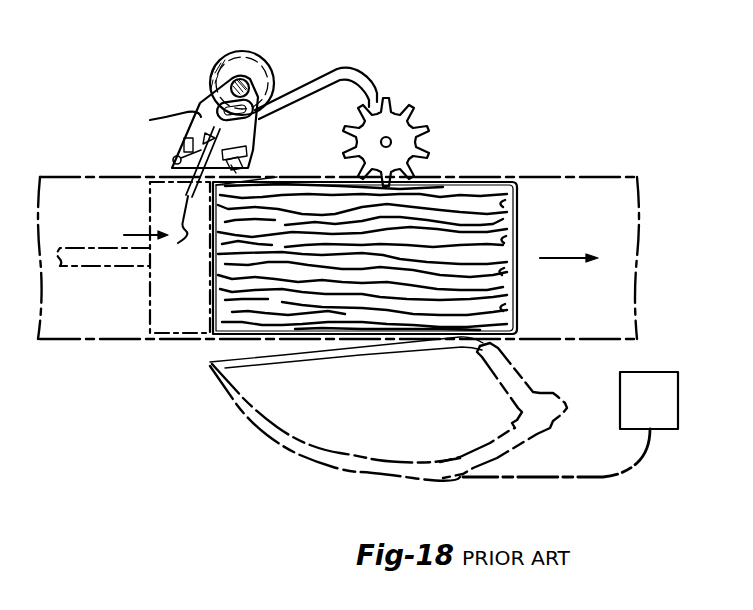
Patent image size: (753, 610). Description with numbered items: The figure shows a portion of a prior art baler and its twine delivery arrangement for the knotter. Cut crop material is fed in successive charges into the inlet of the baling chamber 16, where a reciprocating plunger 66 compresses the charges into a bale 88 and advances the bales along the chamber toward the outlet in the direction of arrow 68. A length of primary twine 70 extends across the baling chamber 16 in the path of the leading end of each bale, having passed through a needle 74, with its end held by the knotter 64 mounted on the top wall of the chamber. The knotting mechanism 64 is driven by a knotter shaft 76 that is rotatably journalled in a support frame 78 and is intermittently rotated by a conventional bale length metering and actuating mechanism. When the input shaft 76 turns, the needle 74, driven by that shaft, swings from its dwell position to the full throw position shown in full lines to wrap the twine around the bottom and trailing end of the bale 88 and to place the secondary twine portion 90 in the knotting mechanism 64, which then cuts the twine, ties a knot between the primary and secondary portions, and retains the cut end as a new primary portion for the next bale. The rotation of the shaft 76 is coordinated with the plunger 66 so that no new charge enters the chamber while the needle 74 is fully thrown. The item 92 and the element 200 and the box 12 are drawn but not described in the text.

The controller 12 is at (620, 386).
The baling chamber 16 is at (607, 152).
The knotter 64 is at (200, 100).
The reciprocating plunger 66 is at (148, 297).
The arrow 68 is at (565, 258).
The primary twine portion 70 is at (277, 178).
The needle 74 is at (179, 189).
The knotter shaft 76 is at (243, 85).
The support frame 78 is at (161, 119).
The bale 88 is at (408, 250).
The secondary twine portion 90 is at (210, 291).
The rod 92 is at (184, 234).
The sprocket 200 is at (372, 27).